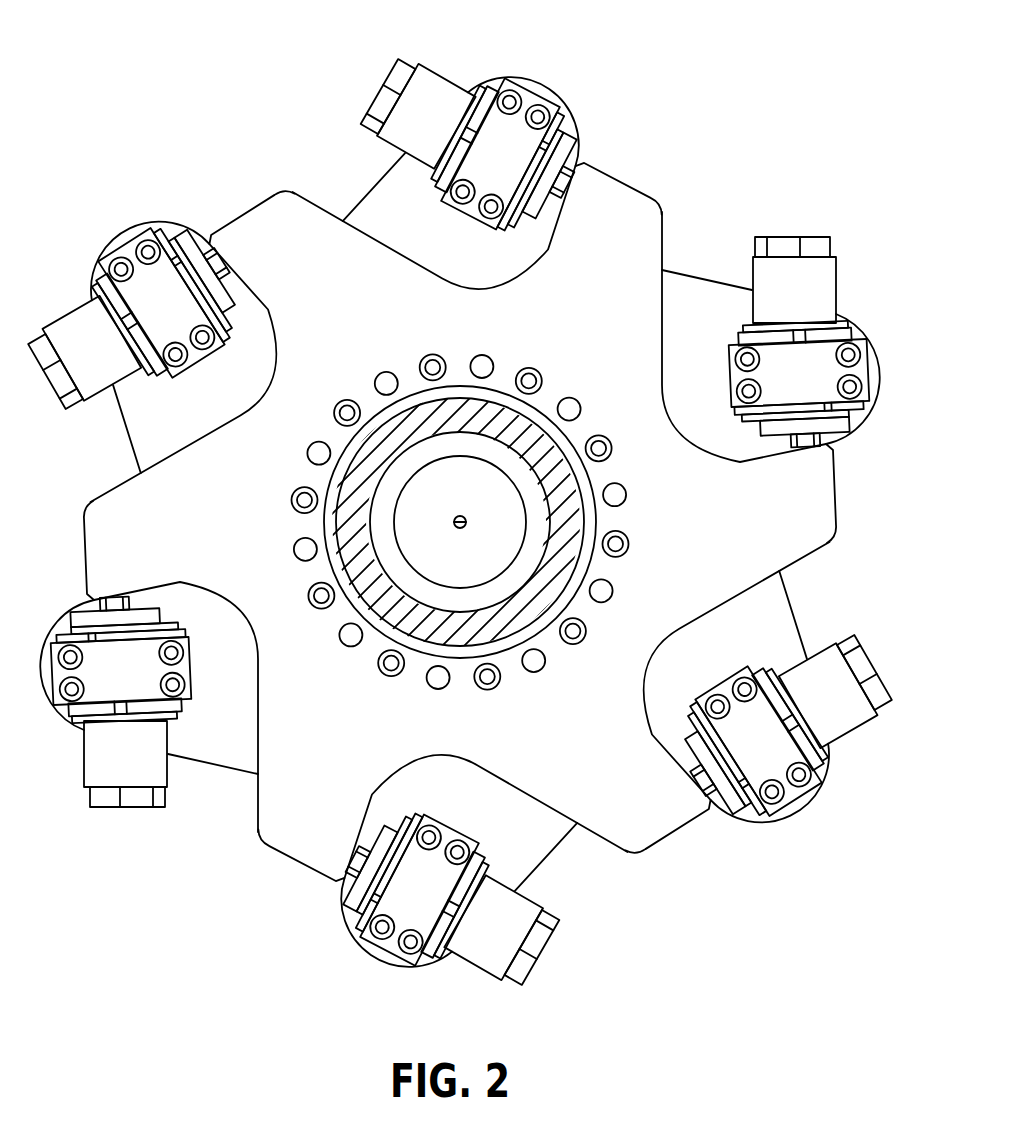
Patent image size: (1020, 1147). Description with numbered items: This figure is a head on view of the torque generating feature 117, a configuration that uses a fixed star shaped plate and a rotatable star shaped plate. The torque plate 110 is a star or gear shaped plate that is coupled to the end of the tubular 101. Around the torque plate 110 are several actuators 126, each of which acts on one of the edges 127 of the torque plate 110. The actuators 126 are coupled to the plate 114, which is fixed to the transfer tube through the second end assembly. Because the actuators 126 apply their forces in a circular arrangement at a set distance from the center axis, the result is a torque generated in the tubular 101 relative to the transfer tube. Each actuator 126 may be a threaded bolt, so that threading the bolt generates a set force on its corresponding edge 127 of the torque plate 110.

The torque generating feature 117 is at (724, 71).
The torque plate 110 is at (617, 187).
The plate 114 is at (415, 253).
The tubular 101 is at (488, 415).
The actuators 126 is at (392, 947).
The edges 127 is at (714, 820).